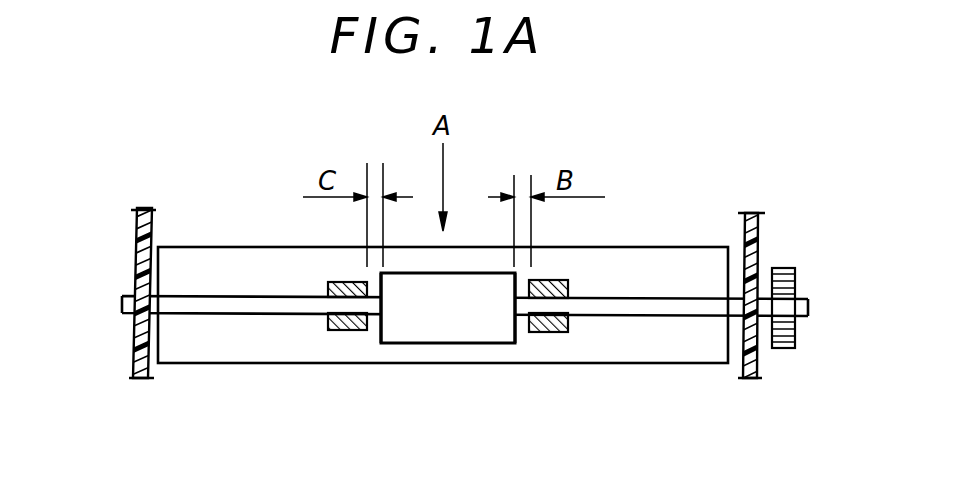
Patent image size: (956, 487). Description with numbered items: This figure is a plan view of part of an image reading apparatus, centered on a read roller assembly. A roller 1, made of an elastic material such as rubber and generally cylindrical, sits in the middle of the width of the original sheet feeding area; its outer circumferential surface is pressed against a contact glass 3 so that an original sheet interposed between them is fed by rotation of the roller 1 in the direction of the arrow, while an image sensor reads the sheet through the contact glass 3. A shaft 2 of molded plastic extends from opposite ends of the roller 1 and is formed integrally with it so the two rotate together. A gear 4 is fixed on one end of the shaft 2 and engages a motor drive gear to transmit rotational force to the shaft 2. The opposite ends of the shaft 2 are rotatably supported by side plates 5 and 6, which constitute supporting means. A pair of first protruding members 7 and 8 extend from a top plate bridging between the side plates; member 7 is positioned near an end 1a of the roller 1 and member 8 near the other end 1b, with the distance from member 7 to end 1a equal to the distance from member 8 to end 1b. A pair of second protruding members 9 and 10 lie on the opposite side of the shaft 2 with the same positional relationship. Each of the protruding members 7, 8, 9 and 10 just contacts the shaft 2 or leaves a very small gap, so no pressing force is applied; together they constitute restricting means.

The roller 1 is at (457, 330).
The end of the roller 1a is at (514, 332).
The other end of the roller 1b is at (381, 328).
The shaft 2 is at (223, 303).
The contact glass 3 is at (672, 340).
The gear 4 is at (783, 267).
The side plate 5 is at (758, 232).
The side plate 6 is at (135, 245).
The first protruding member 7 is at (565, 280).
The first protruding member 8 is at (328, 282).
The second protruding member 9 is at (566, 333).
The second protruding member 10 is at (335, 332).